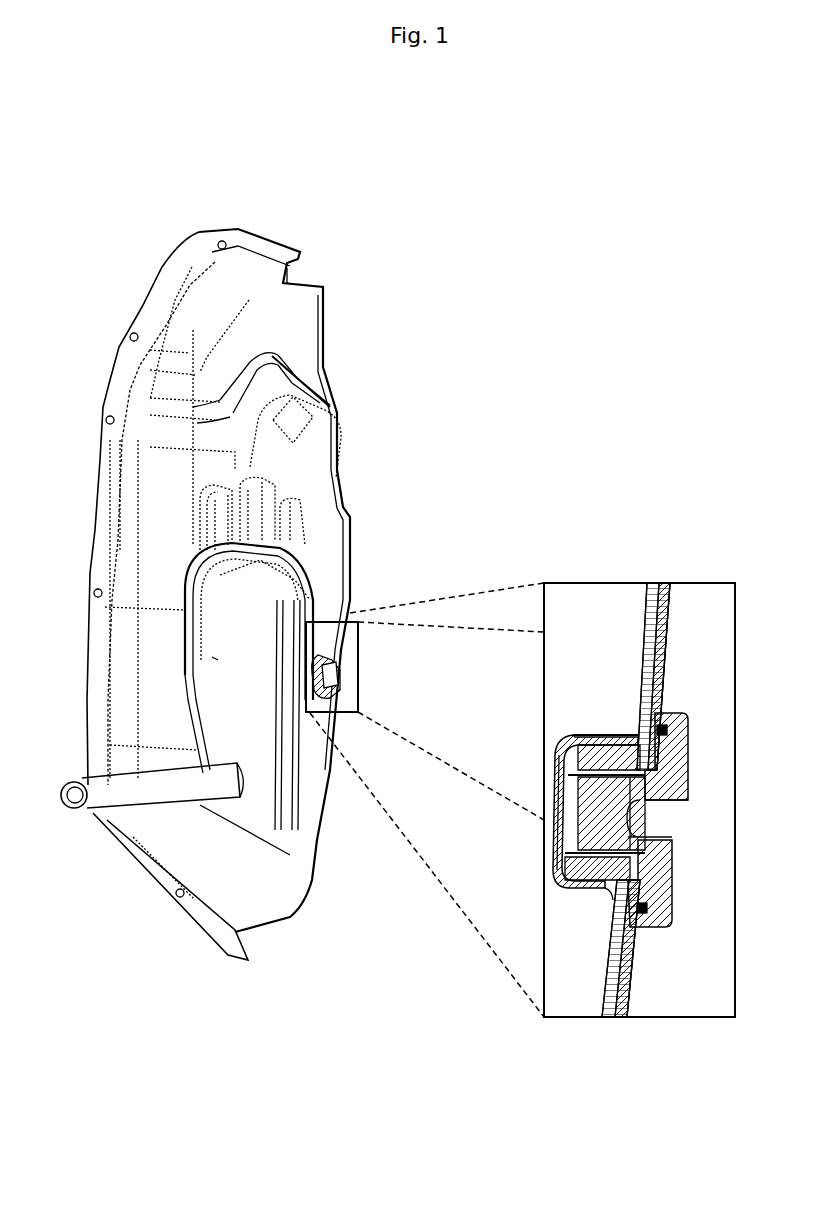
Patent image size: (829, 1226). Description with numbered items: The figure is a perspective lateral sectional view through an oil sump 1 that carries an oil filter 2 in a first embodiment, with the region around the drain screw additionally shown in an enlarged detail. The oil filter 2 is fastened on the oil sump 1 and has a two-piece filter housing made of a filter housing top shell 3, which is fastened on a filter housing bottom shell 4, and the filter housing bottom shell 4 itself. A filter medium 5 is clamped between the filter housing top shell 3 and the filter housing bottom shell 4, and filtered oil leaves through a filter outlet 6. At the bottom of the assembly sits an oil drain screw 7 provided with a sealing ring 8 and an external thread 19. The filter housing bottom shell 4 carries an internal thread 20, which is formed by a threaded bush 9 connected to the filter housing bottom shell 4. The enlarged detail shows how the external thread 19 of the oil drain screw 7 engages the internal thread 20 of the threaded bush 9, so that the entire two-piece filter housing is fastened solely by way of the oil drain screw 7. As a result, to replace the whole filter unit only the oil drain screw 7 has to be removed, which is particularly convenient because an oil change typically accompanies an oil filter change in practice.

The oil sump 1 is at (322, 290).
The oil filter 2 is at (243, 708).
The filter housing top shell 3 is at (262, 603).
The filter housing bottom shell 4 is at (556, 915).
The filter medium 5 is at (353, 563).
The filter outlet 6 is at (82, 785).
The oil drain screw 7 is at (325, 718).
The sealing ring 8 is at (650, 930).
The threaded bush 9 is at (605, 748).
The external thread 19 is at (640, 840).
The internal thread 20 is at (218, 657).